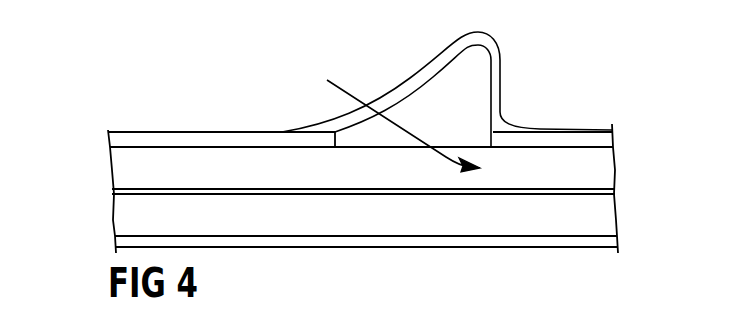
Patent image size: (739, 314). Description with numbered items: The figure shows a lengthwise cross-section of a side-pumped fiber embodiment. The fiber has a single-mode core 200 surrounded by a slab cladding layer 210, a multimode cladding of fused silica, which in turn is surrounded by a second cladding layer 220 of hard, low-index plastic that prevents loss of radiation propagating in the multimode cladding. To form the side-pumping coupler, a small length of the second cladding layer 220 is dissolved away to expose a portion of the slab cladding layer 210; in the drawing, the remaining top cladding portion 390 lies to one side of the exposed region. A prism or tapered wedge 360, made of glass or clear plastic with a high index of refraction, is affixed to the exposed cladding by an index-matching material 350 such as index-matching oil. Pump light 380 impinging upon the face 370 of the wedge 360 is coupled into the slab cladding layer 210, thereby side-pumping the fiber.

The single-mode core 200 is at (138, 195).
The slab cladding layer 210 is at (314, 219).
The second cladding layer 220 is at (237, 249).
The index-matching material 350 is at (455, 146).
The tapered wedge 360 is at (475, 70).
The face of wedge 370 is at (443, 60).
The pump light 380 is at (337, 55).
The left top layer portion 390 is at (308, 136).